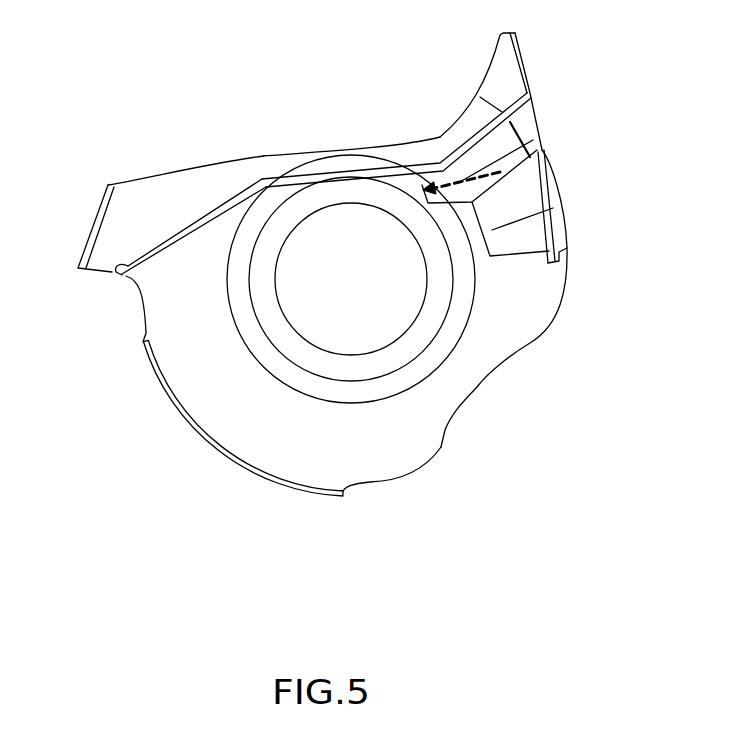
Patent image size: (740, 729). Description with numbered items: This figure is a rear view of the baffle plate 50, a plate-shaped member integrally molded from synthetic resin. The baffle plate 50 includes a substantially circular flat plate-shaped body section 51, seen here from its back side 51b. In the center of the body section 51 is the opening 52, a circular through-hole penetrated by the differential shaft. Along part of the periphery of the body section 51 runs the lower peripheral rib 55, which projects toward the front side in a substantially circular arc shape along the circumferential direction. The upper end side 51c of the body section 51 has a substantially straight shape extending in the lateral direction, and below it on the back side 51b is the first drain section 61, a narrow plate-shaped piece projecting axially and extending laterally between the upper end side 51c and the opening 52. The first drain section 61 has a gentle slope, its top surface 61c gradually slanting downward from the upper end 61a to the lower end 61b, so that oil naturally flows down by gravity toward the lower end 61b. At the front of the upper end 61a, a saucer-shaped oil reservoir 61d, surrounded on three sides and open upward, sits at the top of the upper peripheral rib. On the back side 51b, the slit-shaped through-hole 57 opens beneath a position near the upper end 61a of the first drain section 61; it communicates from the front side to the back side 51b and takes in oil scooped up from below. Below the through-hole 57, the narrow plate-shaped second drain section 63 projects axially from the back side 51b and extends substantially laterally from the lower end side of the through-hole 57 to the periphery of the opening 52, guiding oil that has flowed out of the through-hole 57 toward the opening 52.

The baffle plate 50 is at (607, 80).
The body section 51 is at (524, 300).
The back side 51b is at (433, 460).
The upper end side 51c is at (177, 175).
The opening 52 is at (382, 345).
The lower peripheral rib 55 is at (208, 450).
The through-hole 57 is at (516, 150).
The first drain section 61 is at (420, 158).
The upper end 61a is at (512, 98).
The lower end 61b is at (107, 273).
The top surface 61c is at (223, 204).
The oil reservoir 61d is at (499, 74).
The second drain section 63 is at (510, 190).